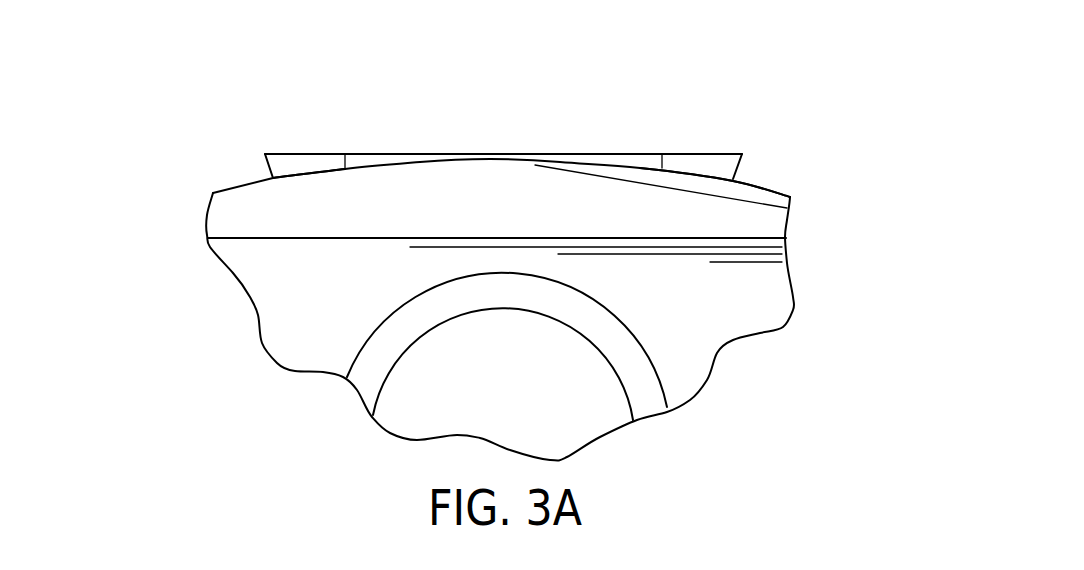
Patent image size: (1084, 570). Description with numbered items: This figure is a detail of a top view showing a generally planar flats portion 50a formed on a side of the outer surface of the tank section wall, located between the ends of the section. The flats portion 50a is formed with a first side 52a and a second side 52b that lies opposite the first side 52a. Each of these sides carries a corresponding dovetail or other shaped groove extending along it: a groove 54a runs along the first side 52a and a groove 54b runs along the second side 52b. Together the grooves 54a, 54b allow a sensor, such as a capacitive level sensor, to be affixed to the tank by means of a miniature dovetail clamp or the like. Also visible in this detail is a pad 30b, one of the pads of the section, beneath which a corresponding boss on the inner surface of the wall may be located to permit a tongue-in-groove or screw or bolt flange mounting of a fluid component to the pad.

The pad 30b is at (748, 238).
The flats portion 50a is at (741, 156).
The first side 52a is at (745, 156).
The second side 52b is at (265, 154).
The groove 54a is at (737, 176).
The groove 54b is at (268, 167).